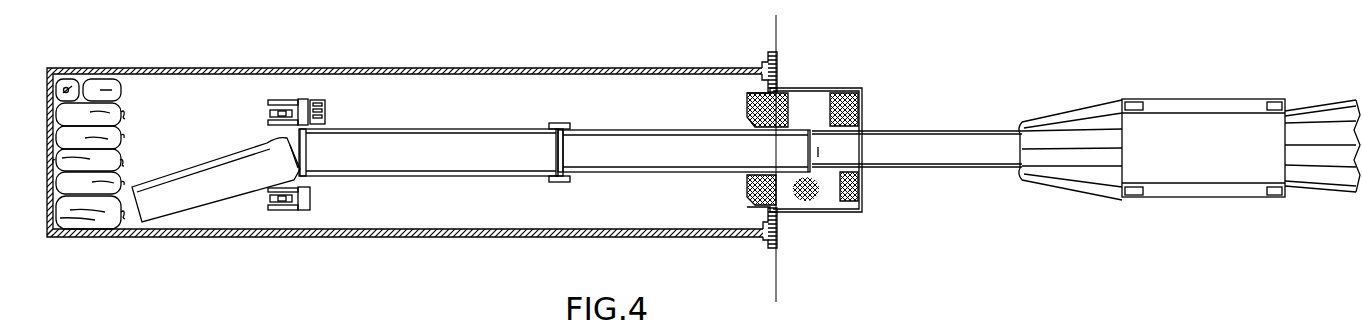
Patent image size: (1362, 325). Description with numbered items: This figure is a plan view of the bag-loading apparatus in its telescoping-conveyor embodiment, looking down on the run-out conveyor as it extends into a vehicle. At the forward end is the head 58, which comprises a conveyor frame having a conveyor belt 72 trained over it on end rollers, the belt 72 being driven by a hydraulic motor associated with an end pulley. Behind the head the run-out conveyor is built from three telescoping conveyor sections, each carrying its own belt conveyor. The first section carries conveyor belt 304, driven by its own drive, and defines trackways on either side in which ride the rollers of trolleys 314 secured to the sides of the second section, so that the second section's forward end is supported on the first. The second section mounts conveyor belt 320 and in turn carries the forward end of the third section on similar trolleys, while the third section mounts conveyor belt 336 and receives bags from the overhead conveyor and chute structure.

The head 58 is at (186, 219).
The conveyor belt 72 is at (220, 188).
The conveyor belt 304 is at (463, 162).
The trolleys 314 is at (560, 128).
The conveyor belt 320 is at (688, 157).
The conveyor belt 336 is at (955, 150).